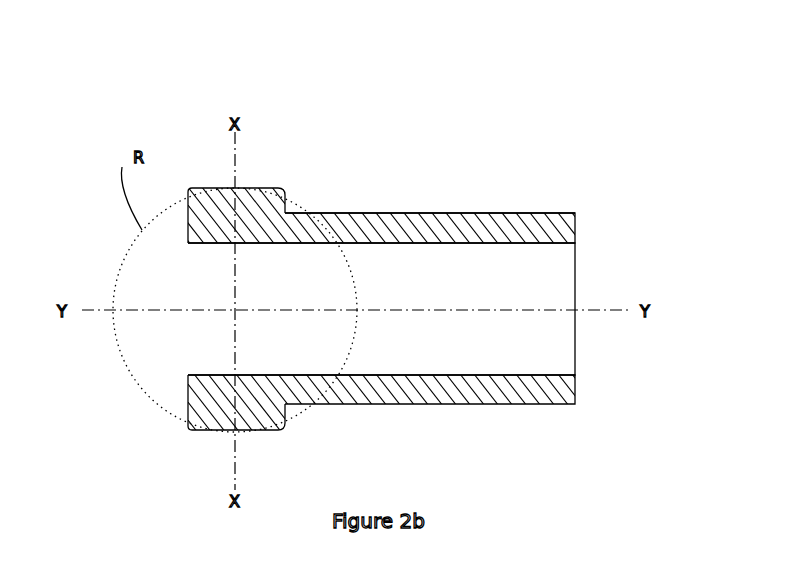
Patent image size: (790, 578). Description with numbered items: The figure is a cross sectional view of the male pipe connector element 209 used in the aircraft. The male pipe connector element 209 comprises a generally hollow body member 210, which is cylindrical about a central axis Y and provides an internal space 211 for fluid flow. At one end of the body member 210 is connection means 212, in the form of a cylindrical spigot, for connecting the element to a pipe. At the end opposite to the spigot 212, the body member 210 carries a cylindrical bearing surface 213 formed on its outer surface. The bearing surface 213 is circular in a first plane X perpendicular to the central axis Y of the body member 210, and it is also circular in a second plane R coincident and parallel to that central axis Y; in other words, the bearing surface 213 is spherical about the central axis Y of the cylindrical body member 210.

The male pipe connector element 209 is at (389, 265).
The hollow body member 210 is at (383, 212).
The internal space 211 is at (525, 337).
The connection means 212 is at (503, 212).
The cylindrical bearing surface 213 is at (262, 186).